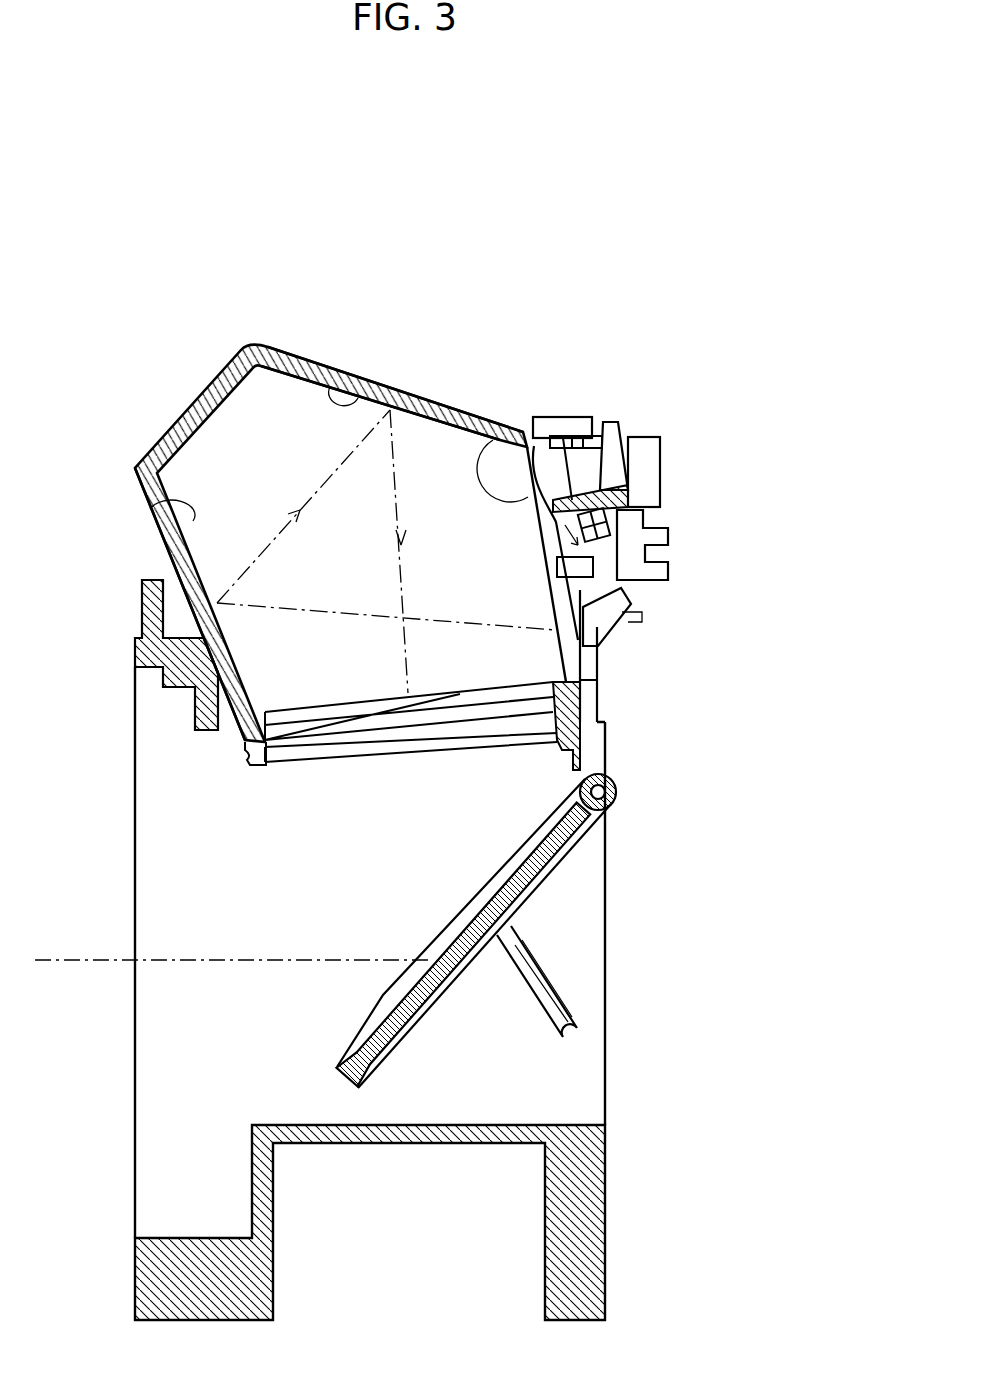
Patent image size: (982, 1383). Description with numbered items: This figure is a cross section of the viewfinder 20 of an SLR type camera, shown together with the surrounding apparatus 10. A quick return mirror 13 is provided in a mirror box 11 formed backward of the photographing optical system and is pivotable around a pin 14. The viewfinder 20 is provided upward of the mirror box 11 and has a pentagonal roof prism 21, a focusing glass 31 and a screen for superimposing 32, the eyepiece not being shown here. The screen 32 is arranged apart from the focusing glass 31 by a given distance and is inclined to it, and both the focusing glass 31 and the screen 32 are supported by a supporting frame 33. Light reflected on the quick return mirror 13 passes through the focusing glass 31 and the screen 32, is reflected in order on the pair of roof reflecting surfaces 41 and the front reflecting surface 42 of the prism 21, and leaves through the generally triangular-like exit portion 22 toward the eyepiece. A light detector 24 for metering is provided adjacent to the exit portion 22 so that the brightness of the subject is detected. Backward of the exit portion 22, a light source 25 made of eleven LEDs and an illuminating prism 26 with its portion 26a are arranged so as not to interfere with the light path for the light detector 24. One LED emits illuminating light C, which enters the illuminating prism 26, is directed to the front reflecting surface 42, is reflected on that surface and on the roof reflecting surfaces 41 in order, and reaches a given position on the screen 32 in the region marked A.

The imaging apparatus 10 is at (731, 236).
The mirror box 11 is at (607, 1080).
The quick return mirror 13 is at (527, 868).
The pin 14 is at (608, 790).
The viewfinder 20 is at (180, 357).
The pentagonal roof prism 21 is at (300, 366).
The exit portion 22 is at (493, 438).
The light detector 24 is at (613, 420).
The light source 25 is at (563, 425).
The illuminating prism 26 is at (640, 616).
The engaging portion 26a is at (580, 655).
The focusing glass 31 is at (348, 752).
The screen for superimposing 32 is at (302, 724).
The supporting frame 33 is at (261, 766).
The roof reflecting surfaces 41 is at (373, 382).
The front reflecting surface 42 is at (150, 508).
The region A is at (593, 545).
The illuminating light C is at (400, 578).